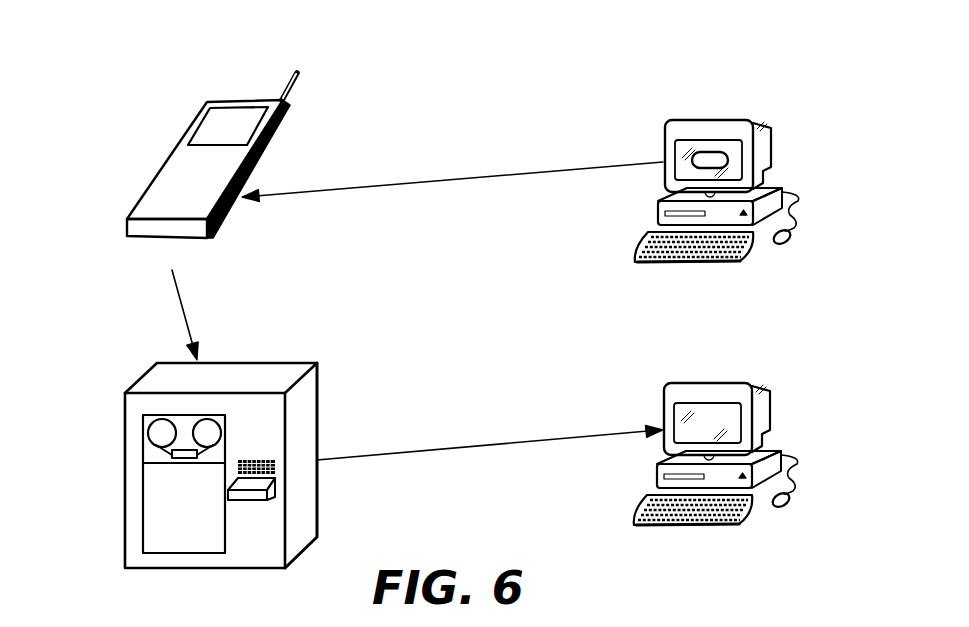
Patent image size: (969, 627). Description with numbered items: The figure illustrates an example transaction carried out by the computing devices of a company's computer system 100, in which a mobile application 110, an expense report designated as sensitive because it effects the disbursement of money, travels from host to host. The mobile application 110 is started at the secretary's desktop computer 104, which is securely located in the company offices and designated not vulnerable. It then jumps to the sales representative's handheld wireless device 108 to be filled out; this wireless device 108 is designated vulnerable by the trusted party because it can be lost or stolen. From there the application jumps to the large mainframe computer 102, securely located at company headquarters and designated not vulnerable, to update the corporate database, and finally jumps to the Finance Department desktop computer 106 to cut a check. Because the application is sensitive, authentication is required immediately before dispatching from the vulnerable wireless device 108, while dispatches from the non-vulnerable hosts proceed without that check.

The company's computer system 100 is at (508, 72).
The mainframe computer 102 is at (288, 363).
The desktop computer 104 is at (712, 120).
The desktop computer 106 is at (711, 382).
The wireless device 108 is at (168, 177).
The mobile application 110 is at (694, 160).